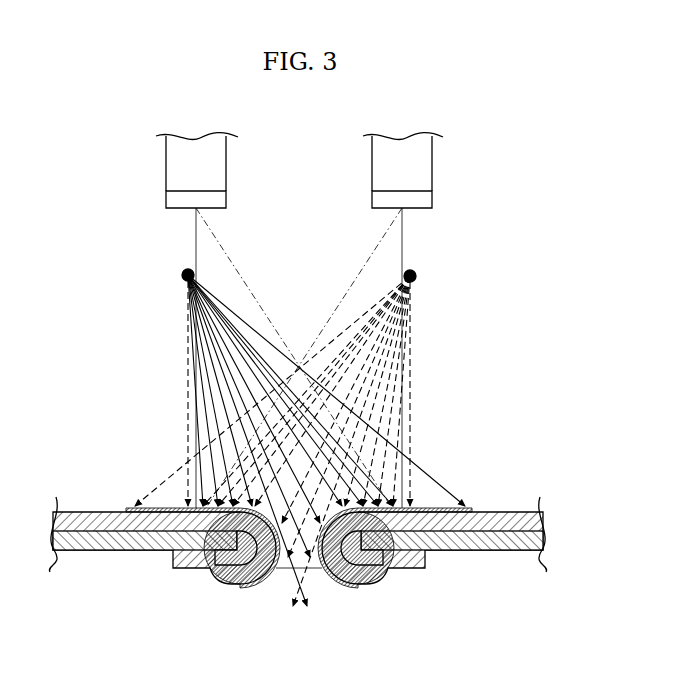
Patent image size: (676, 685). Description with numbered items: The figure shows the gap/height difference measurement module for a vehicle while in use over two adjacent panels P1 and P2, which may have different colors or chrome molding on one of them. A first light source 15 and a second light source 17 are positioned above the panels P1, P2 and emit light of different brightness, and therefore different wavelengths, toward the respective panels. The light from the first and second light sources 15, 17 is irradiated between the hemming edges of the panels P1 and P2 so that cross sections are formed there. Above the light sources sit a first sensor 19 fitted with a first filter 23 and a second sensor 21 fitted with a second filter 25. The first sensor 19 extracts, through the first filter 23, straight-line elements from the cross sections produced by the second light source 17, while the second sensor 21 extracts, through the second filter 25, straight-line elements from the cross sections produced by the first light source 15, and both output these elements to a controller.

The first light source 15 is at (182, 275).
The second light source 17 is at (416, 276).
The first sensor 19 is at (166, 164).
The second sensor 21 is at (432, 164).
The first filter 23 is at (166, 199).
The second filter 25 is at (432, 199).
The panel P1 is at (133, 551).
The panel P2 is at (490, 551).